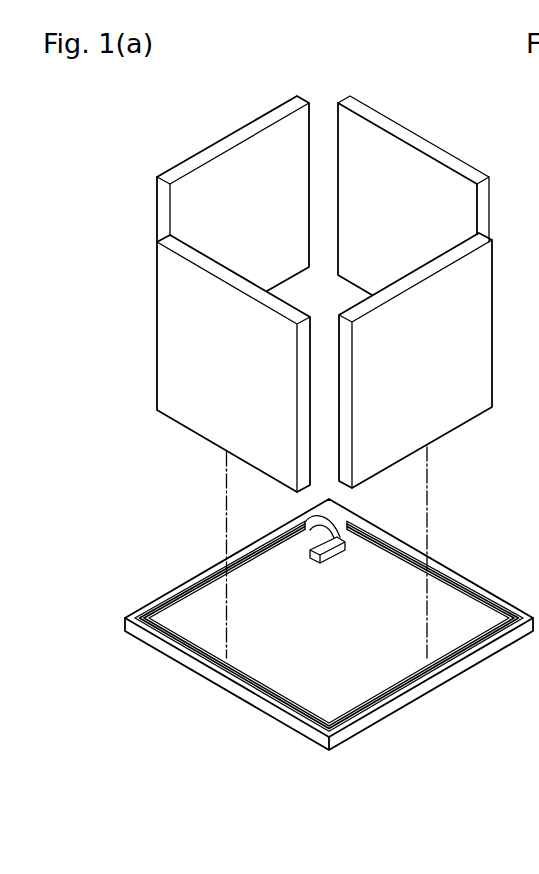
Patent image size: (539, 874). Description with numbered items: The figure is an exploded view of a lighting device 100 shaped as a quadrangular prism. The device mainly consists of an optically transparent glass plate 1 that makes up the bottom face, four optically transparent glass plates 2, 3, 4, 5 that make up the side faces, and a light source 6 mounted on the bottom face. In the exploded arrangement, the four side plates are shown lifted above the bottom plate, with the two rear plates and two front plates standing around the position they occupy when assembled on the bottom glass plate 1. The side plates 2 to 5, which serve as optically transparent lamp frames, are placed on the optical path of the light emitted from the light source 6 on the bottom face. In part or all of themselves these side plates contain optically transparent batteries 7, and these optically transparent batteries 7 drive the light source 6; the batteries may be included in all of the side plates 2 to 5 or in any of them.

The lighting device 100 is at (345, 76).
The optically transparent glass plate 1 is at (417, 688).
The optically transparent glass plate 2 is at (428, 145).
The optically transparent glass plate 3 is at (231, 145).
The optically transparent glass plate 4 is at (227, 273).
The optically transparent glass plate 5 is at (428, 273).
The light source 6 is at (336, 563).
The optically transparent battery 7 is at (230, 188).